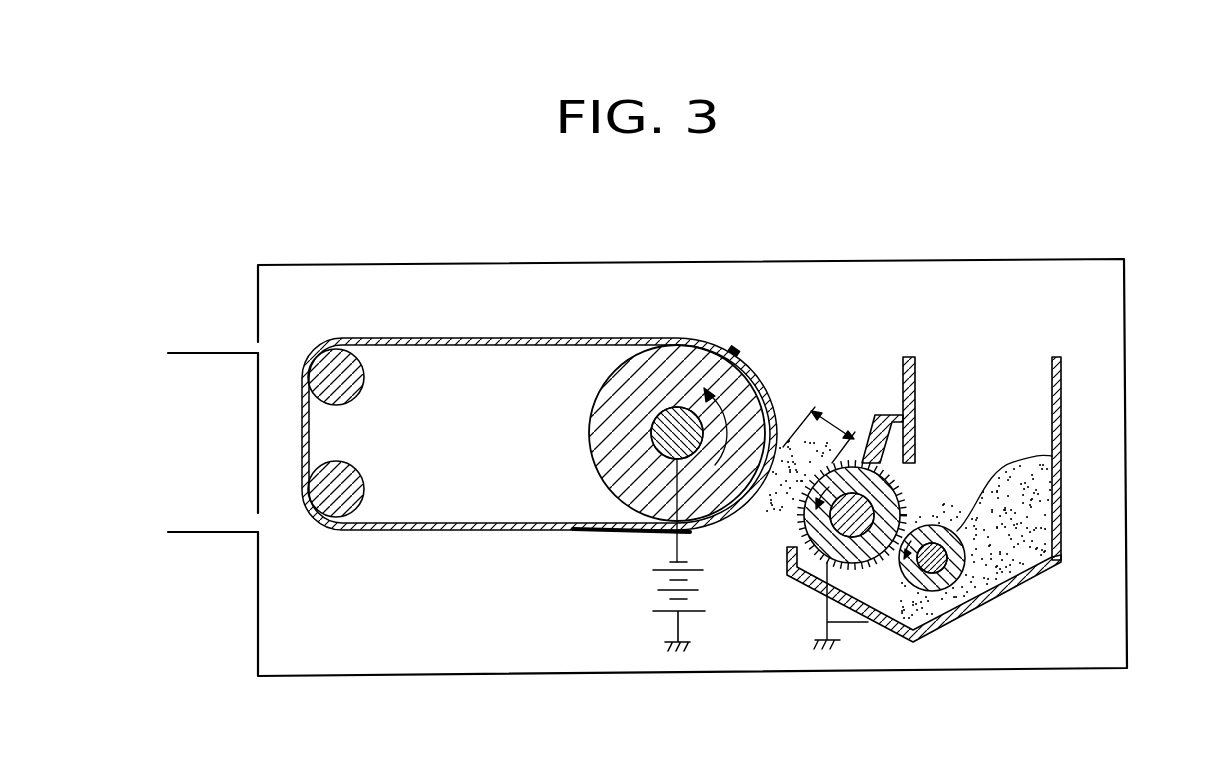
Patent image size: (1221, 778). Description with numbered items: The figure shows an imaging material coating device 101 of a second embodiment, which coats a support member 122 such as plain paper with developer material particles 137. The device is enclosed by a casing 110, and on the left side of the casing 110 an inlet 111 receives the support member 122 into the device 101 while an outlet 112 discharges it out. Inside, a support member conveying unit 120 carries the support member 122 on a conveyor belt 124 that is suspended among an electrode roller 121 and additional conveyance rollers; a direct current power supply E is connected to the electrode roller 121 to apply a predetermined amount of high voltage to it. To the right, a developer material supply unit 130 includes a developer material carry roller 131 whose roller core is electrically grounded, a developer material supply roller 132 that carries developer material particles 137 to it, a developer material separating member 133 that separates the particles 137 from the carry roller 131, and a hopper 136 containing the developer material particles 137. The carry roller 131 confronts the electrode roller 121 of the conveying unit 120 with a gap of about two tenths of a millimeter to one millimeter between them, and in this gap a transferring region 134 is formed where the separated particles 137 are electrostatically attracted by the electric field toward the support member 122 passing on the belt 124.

The imaging material coating device 101 is at (573, 243).
The casing 110 is at (424, 263).
The inlet 111 is at (256, 521).
The outlet 112 is at (256, 341).
The support member conveying unit 120 is at (661, 331).
The electrode roller 121 is at (595, 410).
The support member 122 is at (768, 382).
The conveyor belt 124 is at (443, 528).
The developer material supply unit 130 is at (937, 391).
The developer material carry roller 131 is at (893, 500).
The developer material supply roller 132 is at (943, 582).
The developer material separating member 133 is at (873, 415).
The transferring region 134 is at (770, 510).
The hopper 136 is at (1061, 413).
The developer material particles 137 is at (1007, 467).
The direct current power supply E is at (643, 590).